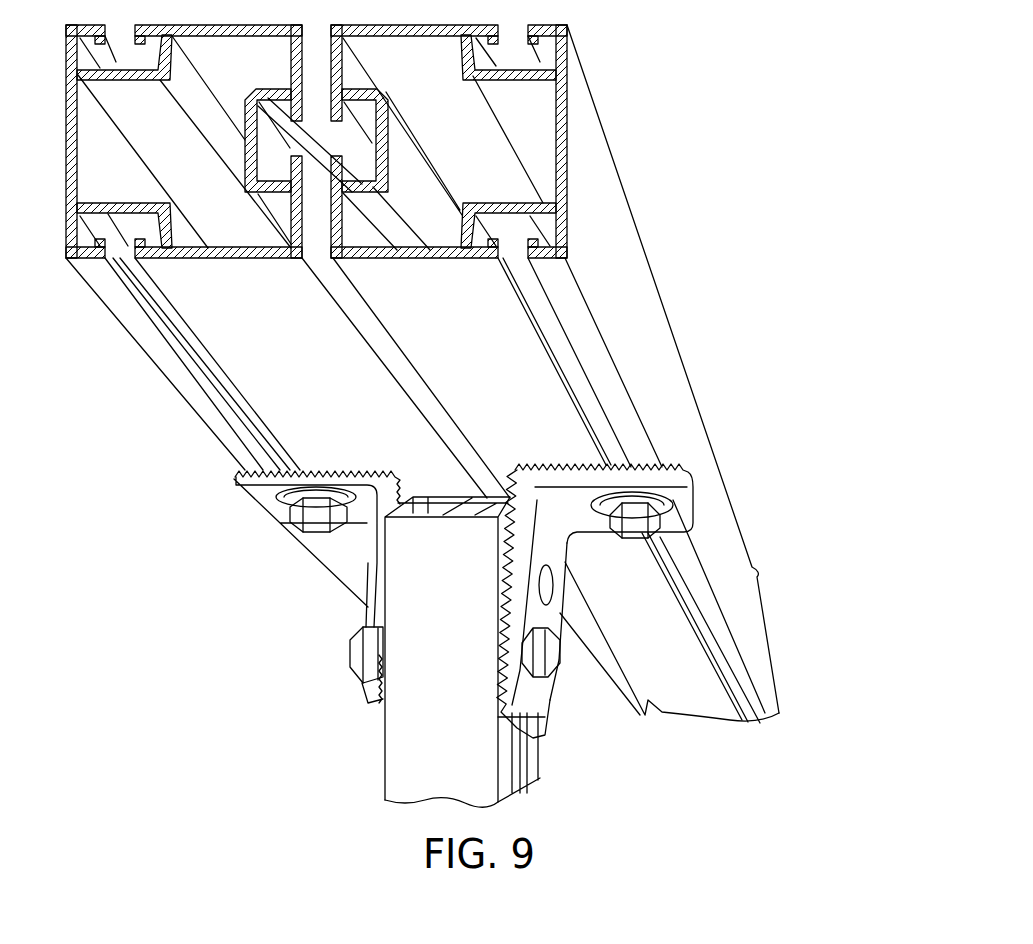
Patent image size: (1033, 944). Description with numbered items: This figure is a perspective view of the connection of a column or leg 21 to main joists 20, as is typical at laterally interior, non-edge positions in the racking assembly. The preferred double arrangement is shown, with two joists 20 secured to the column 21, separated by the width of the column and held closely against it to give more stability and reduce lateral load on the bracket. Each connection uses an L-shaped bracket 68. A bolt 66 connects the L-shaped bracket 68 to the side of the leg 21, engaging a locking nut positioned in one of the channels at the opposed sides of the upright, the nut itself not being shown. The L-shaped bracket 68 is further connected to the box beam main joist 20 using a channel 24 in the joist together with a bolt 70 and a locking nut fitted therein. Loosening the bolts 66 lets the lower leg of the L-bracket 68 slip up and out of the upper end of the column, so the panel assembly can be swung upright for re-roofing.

The main joist 20 is at (108, 330).
The column 21 is at (398, 742).
The channel 24 is at (244, 432).
The bolt 66 is at (557, 660).
The L-shaped bracket 68 is at (375, 565).
The bolt 70 is at (308, 523).